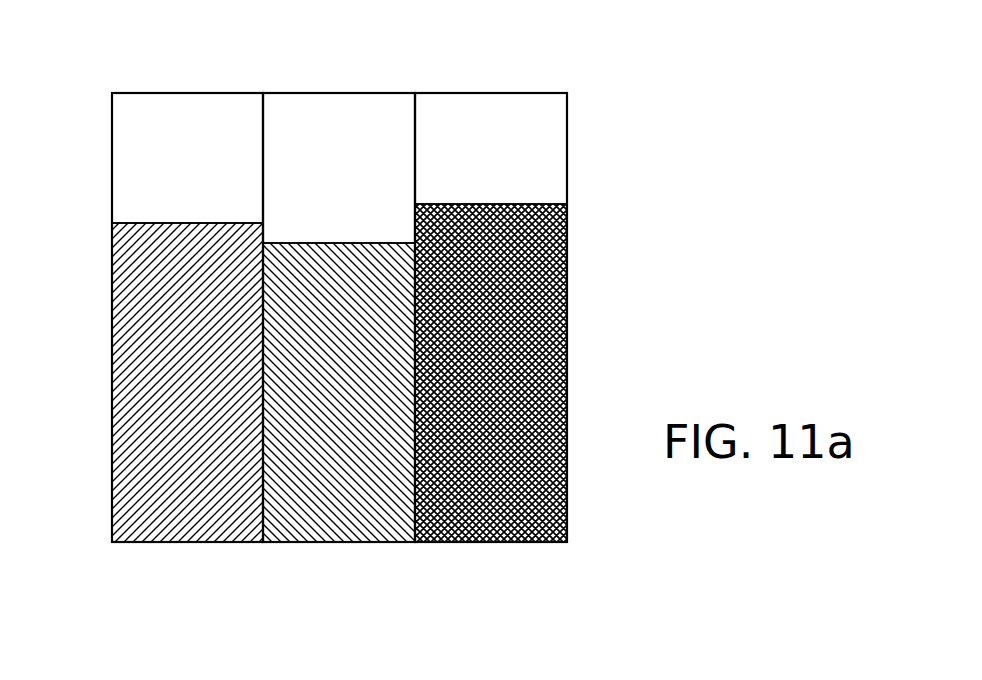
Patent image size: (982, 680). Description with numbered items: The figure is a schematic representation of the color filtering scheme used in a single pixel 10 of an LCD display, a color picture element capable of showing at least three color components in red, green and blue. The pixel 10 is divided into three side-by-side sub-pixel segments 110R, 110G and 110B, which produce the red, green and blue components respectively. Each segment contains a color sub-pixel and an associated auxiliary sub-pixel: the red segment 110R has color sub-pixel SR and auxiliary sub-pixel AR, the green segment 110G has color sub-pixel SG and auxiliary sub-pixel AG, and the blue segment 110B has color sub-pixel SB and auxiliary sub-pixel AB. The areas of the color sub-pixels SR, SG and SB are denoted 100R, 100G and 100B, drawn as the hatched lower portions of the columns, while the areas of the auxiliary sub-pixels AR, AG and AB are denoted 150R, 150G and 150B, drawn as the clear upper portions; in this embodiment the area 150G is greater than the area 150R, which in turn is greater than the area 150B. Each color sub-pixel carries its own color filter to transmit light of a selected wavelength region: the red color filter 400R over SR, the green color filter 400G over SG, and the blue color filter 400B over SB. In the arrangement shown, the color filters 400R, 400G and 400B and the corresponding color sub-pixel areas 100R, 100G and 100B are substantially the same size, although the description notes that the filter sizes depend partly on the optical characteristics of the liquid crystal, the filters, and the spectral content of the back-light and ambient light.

The pixel 10 is at (684, 216).
The area of color sub-pixel SR 100R is at (176, 556).
The area of color sub-pixel SG 100G is at (326, 556).
The area of color sub-pixel SB 100B is at (494, 557).
The sub-pixel segment 110R is at (177, 70).
The sub-pixel segment 110G is at (348, 70).
The sub-pixel segment 110B is at (490, 70).
The area of auxiliary sub-pixel AR 150R is at (130, 160).
The area of auxiliary sub-pixel AG 150G is at (320, 103).
The area of auxiliary sub-pixel AB 150B is at (557, 167).
The red color filter 400R is at (130, 375).
The green color filter 400G is at (360, 520).
The blue color filter 400B is at (557, 337).